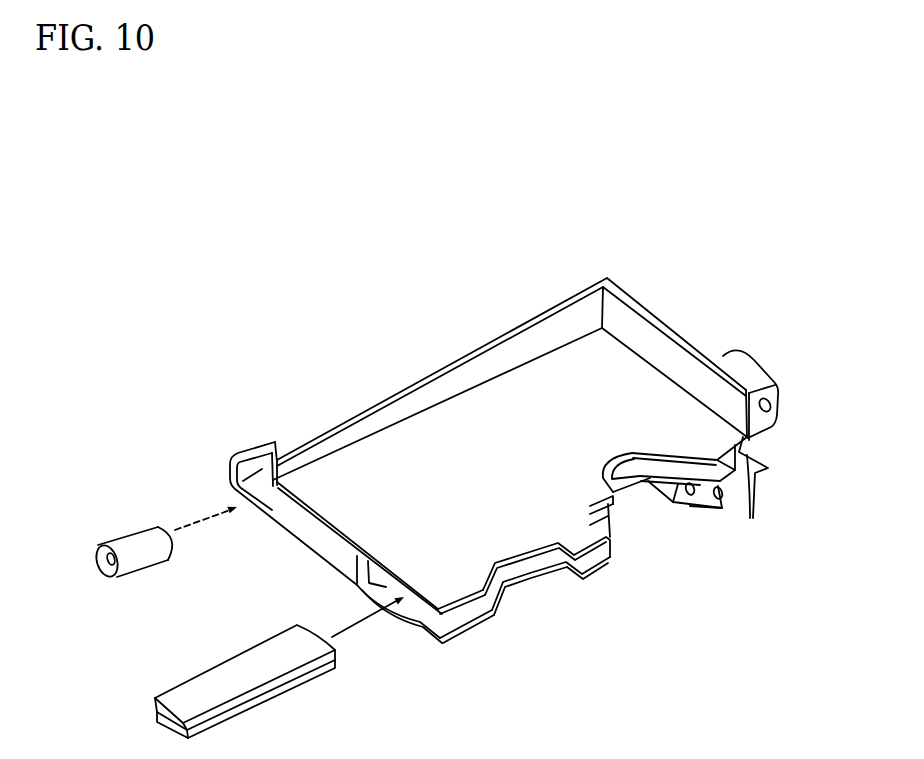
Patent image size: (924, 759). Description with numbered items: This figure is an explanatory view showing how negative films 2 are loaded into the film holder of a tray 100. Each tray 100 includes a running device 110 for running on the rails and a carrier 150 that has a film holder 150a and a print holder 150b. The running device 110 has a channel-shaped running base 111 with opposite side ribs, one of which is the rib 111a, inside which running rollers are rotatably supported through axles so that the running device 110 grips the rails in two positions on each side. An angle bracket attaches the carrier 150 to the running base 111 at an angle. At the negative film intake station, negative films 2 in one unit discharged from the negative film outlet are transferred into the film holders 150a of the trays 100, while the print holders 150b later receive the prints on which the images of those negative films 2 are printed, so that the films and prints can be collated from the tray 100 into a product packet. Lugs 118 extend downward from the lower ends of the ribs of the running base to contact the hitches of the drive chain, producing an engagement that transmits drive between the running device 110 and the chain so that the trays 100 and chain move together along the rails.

The tray 100 is at (504, 487).
The carrier 150 is at (492, 620).
The film holder 150a is at (475, 607).
The print holder 150b is at (536, 536).
The running device 110 is at (685, 521).
The running base 111 is at (698, 542).
The side rib 111a is at (704, 506).
The lug 118 is at (752, 480).
The negative film 2 is at (257, 678).